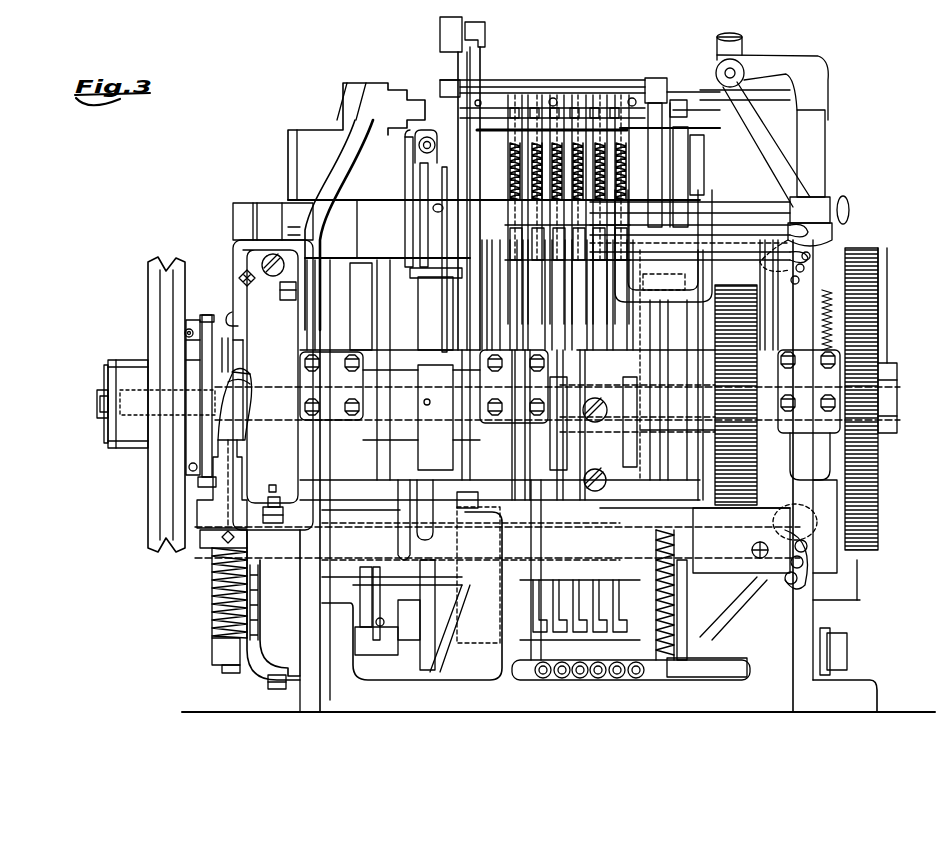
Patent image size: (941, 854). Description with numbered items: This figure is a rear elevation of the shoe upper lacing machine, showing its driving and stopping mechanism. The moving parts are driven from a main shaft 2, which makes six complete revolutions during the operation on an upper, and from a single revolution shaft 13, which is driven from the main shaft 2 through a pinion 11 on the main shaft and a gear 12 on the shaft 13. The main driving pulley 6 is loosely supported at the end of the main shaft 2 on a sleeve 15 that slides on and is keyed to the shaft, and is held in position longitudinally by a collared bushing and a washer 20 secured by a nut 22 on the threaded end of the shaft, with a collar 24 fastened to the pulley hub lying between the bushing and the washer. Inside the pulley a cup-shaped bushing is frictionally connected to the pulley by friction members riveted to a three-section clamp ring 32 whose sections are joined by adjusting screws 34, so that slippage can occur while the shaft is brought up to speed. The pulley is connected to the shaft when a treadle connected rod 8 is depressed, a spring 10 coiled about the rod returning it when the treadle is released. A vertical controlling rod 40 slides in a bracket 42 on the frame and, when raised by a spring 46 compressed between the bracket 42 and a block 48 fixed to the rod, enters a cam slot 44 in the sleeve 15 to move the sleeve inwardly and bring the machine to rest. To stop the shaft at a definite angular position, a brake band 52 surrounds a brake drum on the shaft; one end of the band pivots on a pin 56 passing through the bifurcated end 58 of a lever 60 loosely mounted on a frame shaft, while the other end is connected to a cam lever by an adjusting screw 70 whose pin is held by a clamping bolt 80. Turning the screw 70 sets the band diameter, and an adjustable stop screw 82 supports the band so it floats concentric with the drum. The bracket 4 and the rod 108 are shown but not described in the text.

The main shaft 2 is at (288, 425).
The bracket 4 is at (808, 636).
The main driving pulley 6 is at (150, 277).
The treadle connected rod 8 is at (267, 673).
The spring 10 is at (276, 690).
The pinion 11 is at (880, 400).
The gear 12 is at (878, 330).
The single revolution shaft 13 is at (815, 388).
The sleeve 15 is at (226, 365).
The washer 20 is at (108, 428).
The nut 22 is at (100, 405).
The collar 24 is at (113, 448).
The clamp ring 32 is at (186, 358).
The adjusting screws 34 is at (185, 332).
The controlling rod 40 is at (223, 670).
The bracket 42 is at (217, 657).
The cam slot 44 is at (248, 417).
The spring 46 is at (212, 606).
The block 48 is at (217, 540).
The brake band 52 is at (241, 484).
The pin 56 is at (238, 323).
The bifurcated end 58 is at (236, 286).
The lever 60 is at (267, 212).
The adjusting screw 70 is at (266, 258).
The clamping bolt 80 is at (241, 276).
The adjustable stop screw 82 is at (285, 492).
The rod 108 is at (206, 315).